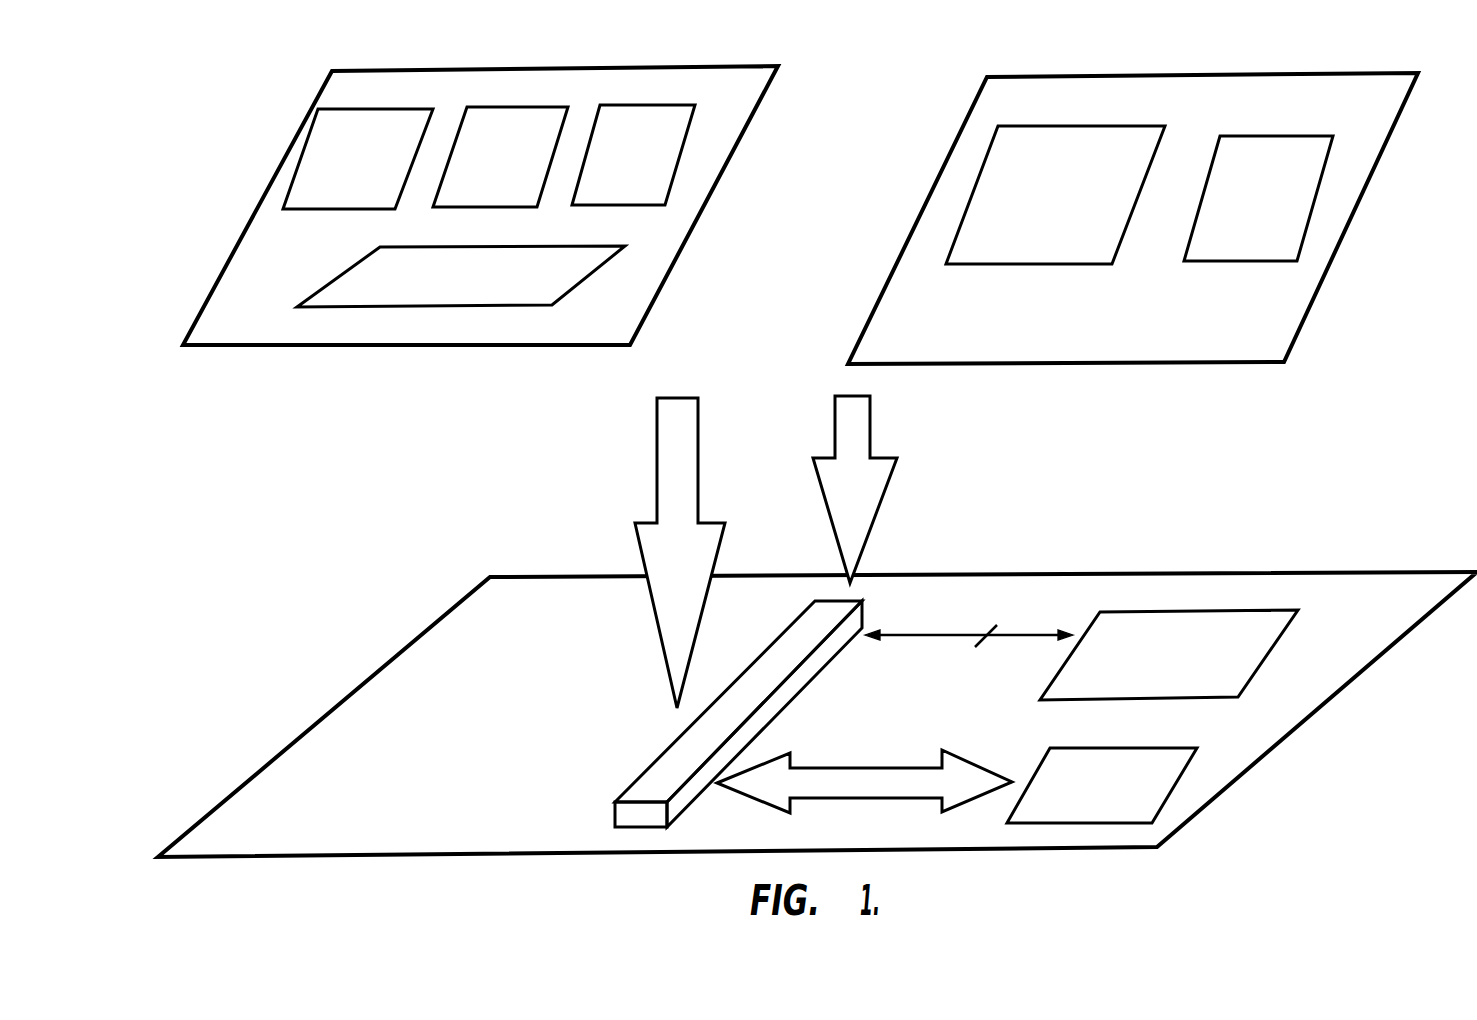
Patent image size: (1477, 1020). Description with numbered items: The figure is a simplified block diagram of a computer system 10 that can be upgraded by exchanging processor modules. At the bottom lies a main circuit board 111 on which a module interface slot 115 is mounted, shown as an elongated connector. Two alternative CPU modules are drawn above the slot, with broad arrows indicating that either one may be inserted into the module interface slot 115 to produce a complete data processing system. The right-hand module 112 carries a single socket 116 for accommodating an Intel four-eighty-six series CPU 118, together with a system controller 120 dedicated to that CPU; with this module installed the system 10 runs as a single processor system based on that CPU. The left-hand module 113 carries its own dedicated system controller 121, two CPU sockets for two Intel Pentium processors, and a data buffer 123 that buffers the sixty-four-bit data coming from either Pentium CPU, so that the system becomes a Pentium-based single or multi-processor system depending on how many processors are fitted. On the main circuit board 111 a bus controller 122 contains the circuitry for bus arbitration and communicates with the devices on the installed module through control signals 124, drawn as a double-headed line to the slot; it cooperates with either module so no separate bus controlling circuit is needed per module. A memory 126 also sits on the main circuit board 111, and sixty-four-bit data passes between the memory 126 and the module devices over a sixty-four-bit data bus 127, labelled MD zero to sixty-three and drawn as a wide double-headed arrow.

The computer system 10 is at (142, 517).
The main circuit board 111 is at (383, 665).
The CPU module 112 is at (1277, 305).
The CPU module 113 is at (222, 310).
The module interface slot 115 is at (665, 777).
The socket 116 is at (1032, 265).
The 486 series CPU 118 is at (1058, 231).
The system controller 120 is at (1270, 233).
The system controller 121 is at (640, 194).
The bus controller 122 is at (1175, 683).
The data buffer 123 is at (342, 276).
The control signals 124 is at (969, 622).
The memory 126 is at (1183, 782).
The 64-bit data bus 127 is at (865, 788).